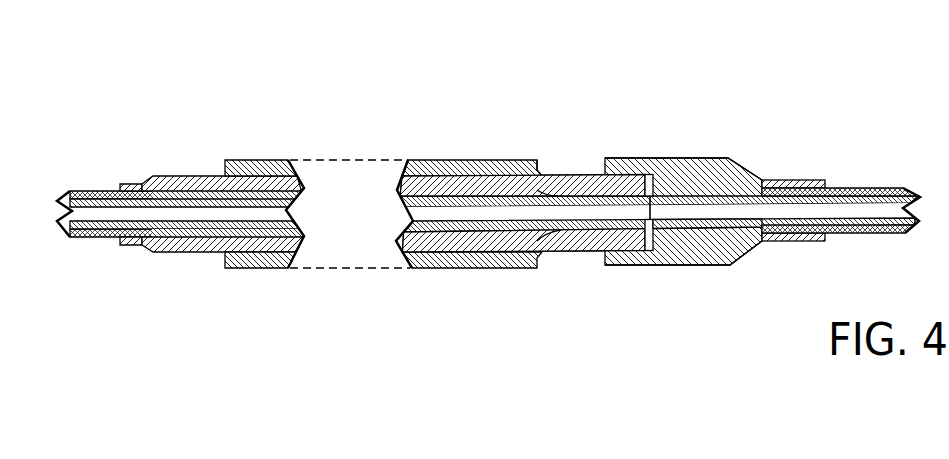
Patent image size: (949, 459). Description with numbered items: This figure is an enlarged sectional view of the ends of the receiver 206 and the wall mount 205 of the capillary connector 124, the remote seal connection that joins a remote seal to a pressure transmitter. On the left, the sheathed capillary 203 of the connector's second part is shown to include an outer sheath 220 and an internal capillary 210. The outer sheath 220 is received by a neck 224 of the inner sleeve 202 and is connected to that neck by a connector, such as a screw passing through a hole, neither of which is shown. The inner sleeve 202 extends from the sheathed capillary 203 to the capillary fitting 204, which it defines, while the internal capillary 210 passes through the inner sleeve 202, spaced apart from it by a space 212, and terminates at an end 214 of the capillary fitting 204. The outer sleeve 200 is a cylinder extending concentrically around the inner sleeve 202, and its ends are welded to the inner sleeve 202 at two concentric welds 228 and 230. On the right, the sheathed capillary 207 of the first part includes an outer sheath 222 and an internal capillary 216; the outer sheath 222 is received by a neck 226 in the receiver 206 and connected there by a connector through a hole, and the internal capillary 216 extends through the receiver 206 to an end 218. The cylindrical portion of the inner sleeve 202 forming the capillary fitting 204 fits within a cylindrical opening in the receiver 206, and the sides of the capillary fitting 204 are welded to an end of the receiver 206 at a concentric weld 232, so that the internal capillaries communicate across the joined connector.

The capillary connector 124 is at (658, 107).
The outer sleeve 200 is at (270, 160).
The inner sleeve 202 is at (188, 176).
The sheathed capillary 203 is at (92, 176).
The capillary fitting 204 is at (596, 156).
The wall mount 205 is at (359, 126).
The receiver 206 is at (725, 158).
The sheathed capillary 207 is at (900, 242).
The internal capillary 210 is at (178, 229).
The space 212 is at (262, 252).
The end 214 is at (652, 196).
The internal capillary 216 is at (830, 241).
The end 218 is at (663, 230).
The outer sheath 220 is at (90, 238).
The outer sheath 222 is at (862, 188).
The neck 224 is at (140, 183).
The neck 226 is at (807, 180).
The concentric weld 228 is at (225, 172).
The concentric weld 230 is at (537, 158).
The concentric weld 232 is at (602, 252).